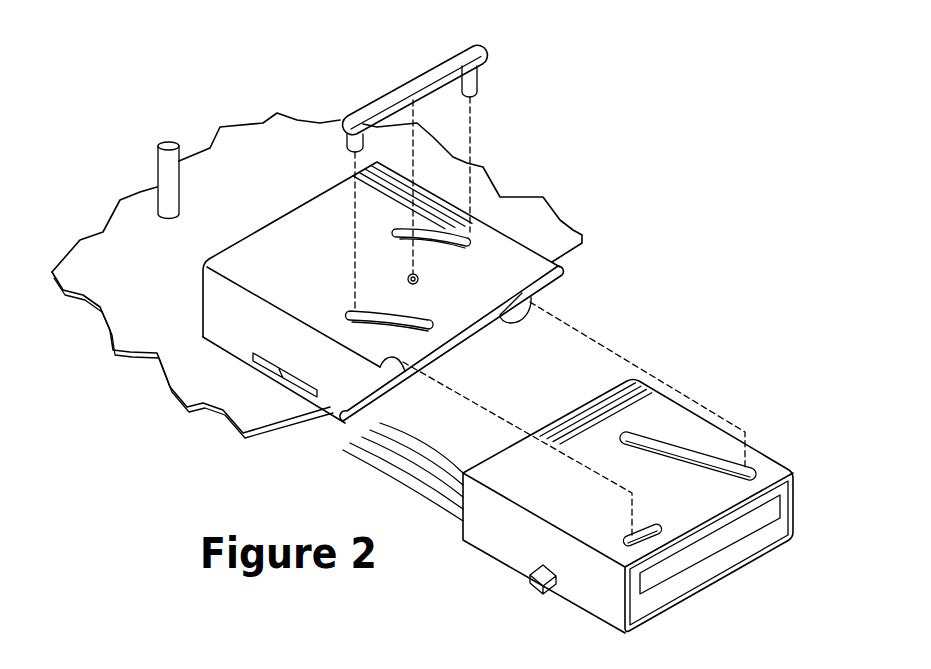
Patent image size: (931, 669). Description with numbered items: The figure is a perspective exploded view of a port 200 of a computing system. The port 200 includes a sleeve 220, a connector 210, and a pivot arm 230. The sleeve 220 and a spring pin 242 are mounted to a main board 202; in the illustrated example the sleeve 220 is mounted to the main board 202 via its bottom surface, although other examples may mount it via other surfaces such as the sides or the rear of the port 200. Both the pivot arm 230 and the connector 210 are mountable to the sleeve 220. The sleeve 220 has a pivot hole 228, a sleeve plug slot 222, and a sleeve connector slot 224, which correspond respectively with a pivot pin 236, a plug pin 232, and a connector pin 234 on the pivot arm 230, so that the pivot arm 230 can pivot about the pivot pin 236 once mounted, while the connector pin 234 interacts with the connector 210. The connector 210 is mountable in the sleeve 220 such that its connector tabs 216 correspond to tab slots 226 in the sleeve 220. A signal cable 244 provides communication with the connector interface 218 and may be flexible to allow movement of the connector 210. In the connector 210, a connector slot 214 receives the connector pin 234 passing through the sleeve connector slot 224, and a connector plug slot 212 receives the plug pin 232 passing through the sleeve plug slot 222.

The port 200 is at (697, 162).
The main board 202 is at (283, 123).
The connector 210 is at (768, 458).
The connector plug slot 212 is at (707, 463).
The connector slot 214 is at (633, 520).
The connector tabs 216 is at (528, 581).
The connector interface 218 is at (718, 560).
The sleeve 220 is at (260, 230).
The sleeve plug slot 222 is at (393, 230).
The sleeve connector slot 224 is at (352, 312).
The tab slots 226 is at (272, 382).
The pivot hole 228 is at (420, 279).
The pivot arm 230 is at (430, 78).
The plug pin 232 is at (480, 86).
The connector pin 234 is at (346, 151).
The pivot pin 236 is at (421, 108).
The spring pin 242 is at (169, 141).
The signal cable 244 is at (372, 468).